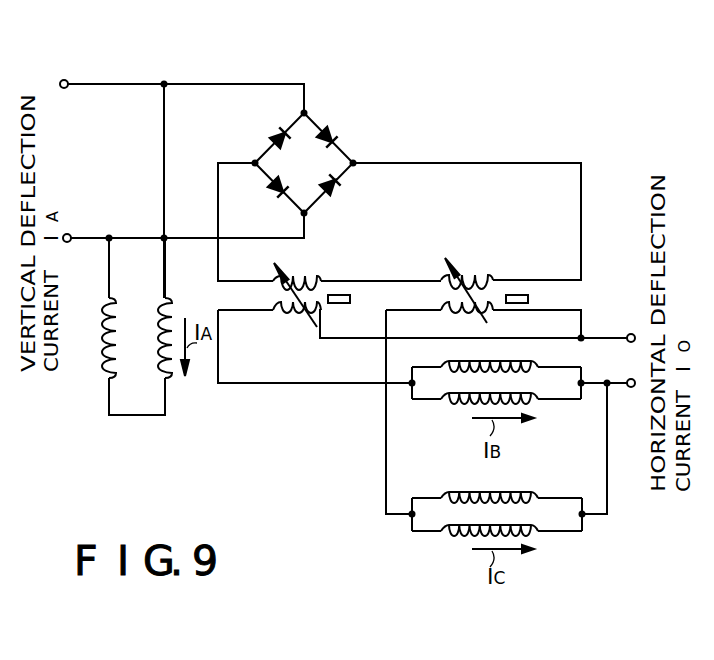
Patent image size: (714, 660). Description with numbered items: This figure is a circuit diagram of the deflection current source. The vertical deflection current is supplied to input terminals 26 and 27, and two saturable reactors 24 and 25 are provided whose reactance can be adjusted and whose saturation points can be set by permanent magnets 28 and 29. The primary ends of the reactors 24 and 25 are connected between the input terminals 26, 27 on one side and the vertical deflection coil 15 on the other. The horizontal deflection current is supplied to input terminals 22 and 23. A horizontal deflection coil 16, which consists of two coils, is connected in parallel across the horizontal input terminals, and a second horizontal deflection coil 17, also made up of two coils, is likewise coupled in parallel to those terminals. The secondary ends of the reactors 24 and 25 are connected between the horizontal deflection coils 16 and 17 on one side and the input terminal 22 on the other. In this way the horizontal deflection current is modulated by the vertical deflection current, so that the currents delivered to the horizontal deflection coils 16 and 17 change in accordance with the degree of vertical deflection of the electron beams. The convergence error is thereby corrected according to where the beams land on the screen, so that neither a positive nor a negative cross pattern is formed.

The vertical deflection coil 15 is at (143, 416).
The horizontal deflection coil 16 is at (548, 350).
The horizontal deflection coil 17 is at (450, 494).
The input terminal 22 is at (630, 334).
The input terminal 23 is at (630, 378).
The saturable reactor 24 is at (320, 285).
The saturable reactor 25 is at (492, 285).
The input terminal 26 is at (68, 82).
The input terminal 27 is at (71, 236).
The permanent magnet 28 is at (350, 299).
The permanent magnet 29 is at (528, 299).